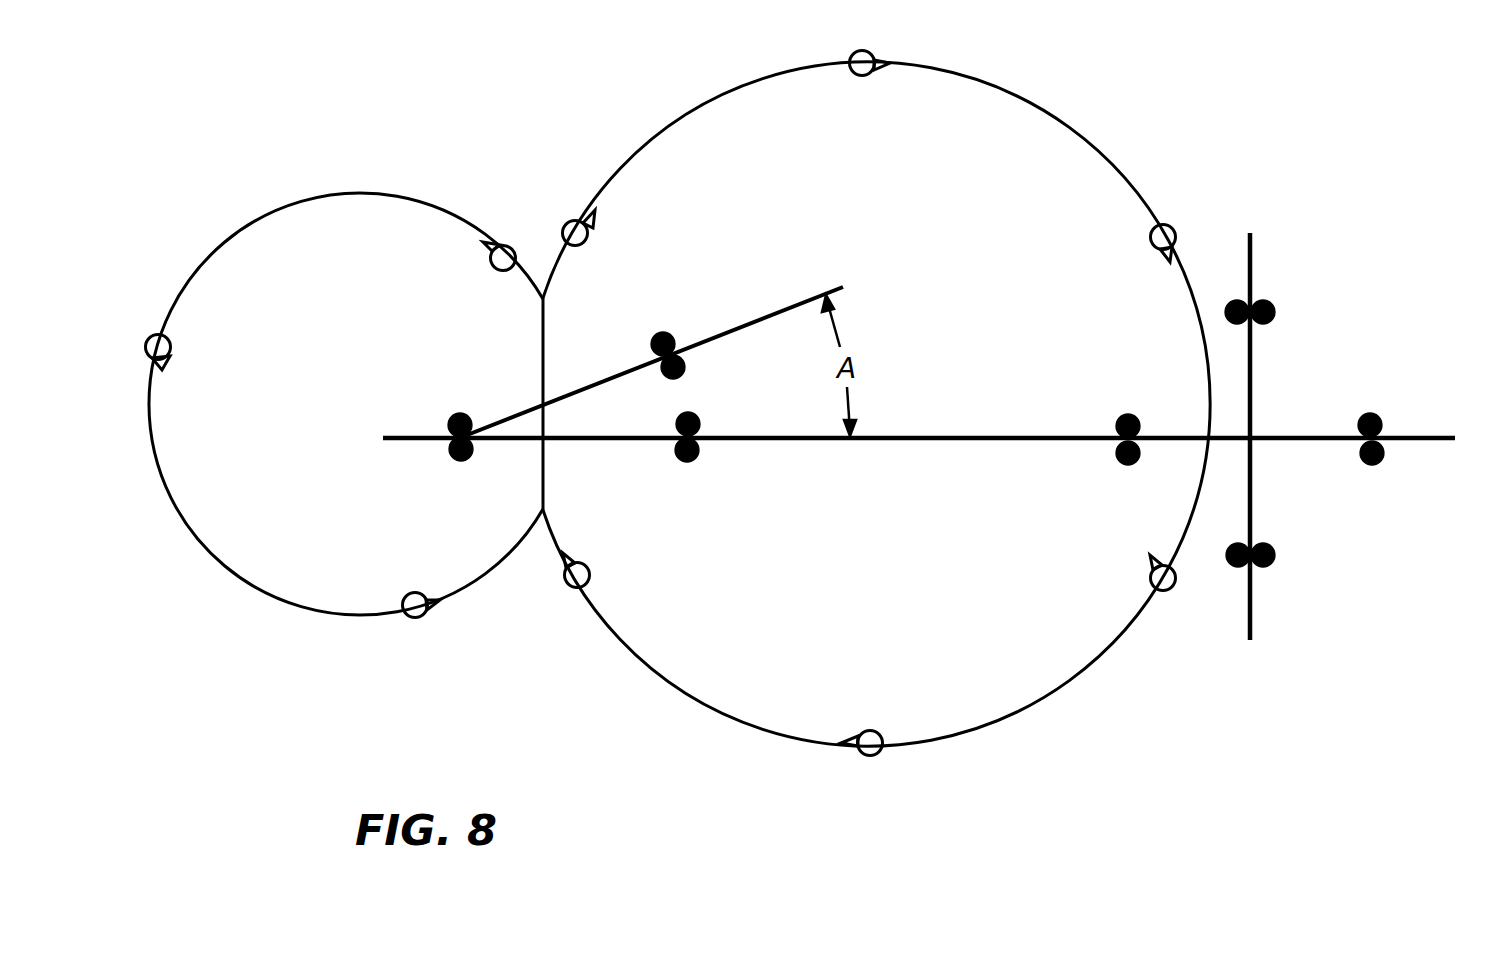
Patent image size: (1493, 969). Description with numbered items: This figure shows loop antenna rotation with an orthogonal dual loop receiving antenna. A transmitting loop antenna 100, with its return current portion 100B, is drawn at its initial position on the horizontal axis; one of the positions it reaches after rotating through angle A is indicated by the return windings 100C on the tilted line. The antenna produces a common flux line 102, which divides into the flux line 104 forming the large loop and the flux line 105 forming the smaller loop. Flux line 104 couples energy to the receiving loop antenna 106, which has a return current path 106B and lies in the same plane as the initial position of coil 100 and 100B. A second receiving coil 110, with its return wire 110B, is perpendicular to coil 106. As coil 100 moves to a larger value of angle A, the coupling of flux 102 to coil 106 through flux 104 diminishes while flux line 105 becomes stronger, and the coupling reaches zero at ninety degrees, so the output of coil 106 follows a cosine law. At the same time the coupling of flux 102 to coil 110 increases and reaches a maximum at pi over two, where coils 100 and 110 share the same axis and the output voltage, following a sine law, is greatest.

The loop antenna 100 is at (448, 422).
The return current portion 100B is at (698, 458).
The return windings 100C is at (673, 337).
The common flux line 102 is at (542, 343).
The flux line 104 is at (978, 85).
The flux line 105 is at (355, 192).
The loop antenna 106 is at (1127, 417).
The return current path 106B is at (1370, 463).
The coil 110 is at (1267, 563).
The return wire 110B is at (1267, 303).